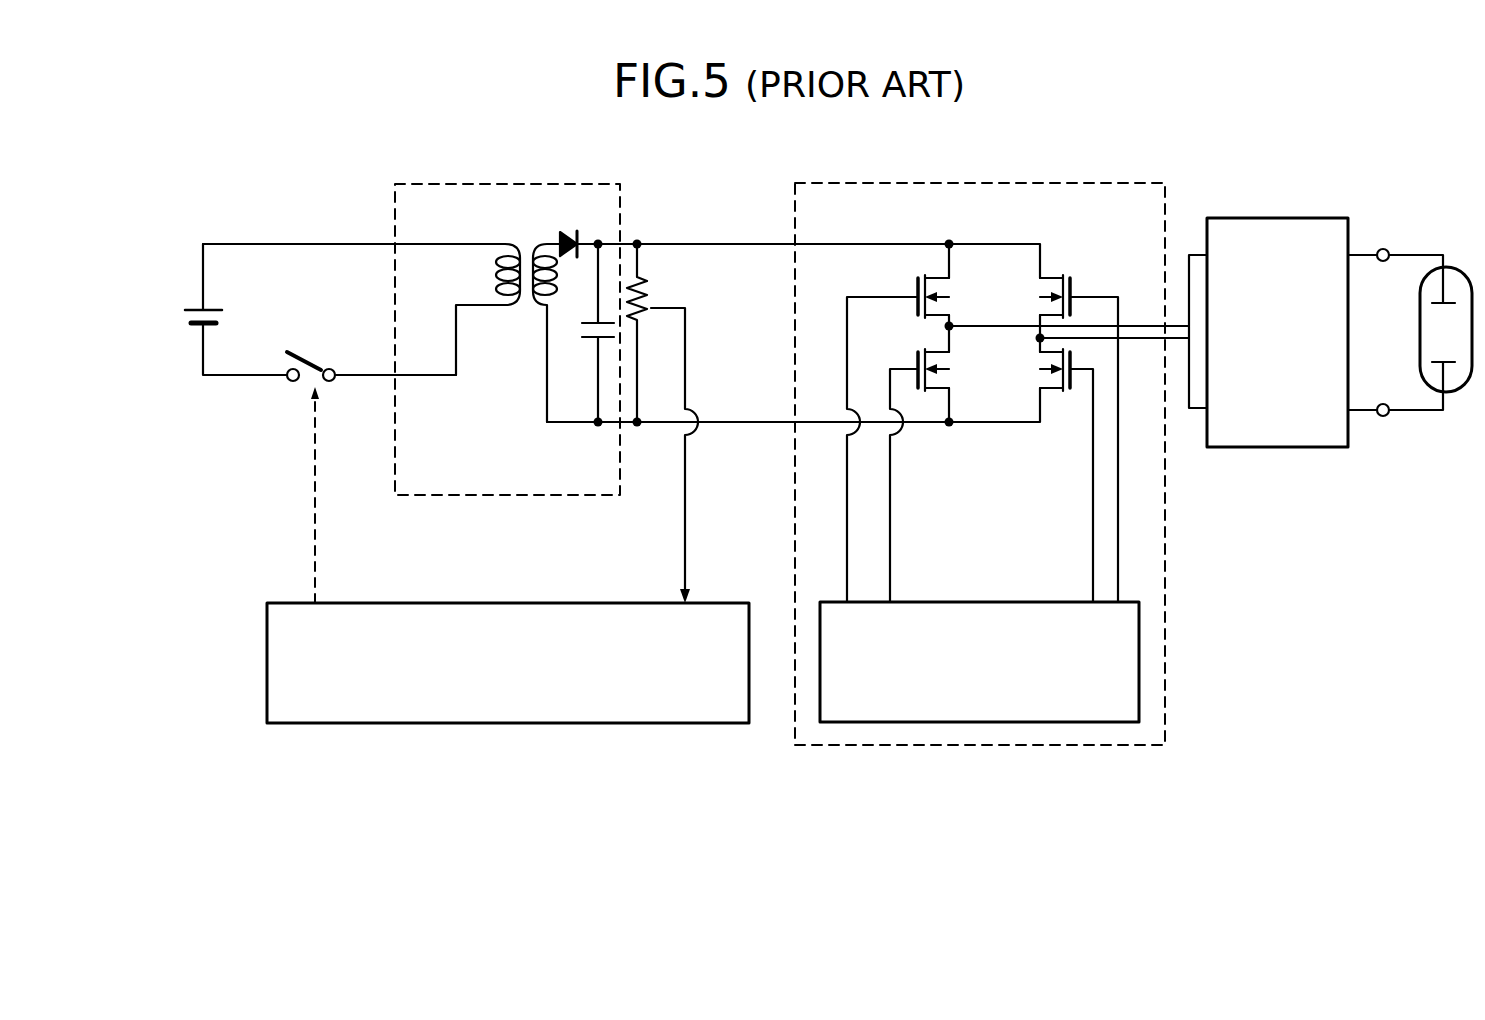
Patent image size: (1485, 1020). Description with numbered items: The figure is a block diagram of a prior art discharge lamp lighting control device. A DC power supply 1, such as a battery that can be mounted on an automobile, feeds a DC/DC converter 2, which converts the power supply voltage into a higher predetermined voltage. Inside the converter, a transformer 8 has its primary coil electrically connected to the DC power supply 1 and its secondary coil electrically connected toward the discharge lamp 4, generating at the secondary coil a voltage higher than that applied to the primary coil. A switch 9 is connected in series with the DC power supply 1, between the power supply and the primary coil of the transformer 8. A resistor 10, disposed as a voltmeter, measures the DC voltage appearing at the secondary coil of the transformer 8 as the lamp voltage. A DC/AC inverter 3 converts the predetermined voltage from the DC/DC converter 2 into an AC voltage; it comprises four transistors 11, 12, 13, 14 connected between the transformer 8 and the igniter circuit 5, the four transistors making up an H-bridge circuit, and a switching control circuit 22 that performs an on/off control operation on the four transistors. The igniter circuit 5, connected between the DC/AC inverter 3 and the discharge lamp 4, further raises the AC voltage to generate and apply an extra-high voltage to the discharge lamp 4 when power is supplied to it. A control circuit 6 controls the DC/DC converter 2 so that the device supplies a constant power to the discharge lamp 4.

The DC power supply 1 is at (194, 308).
The switch 9 is at (318, 363).
The DC/DC converter 2 is at (519, 185).
The transformer 8 is at (526, 241).
The resistor 10 is at (653, 294).
The DC/AC inverter 3 is at (988, 184).
The transistor 11 is at (914, 286).
The transistor 12 is at (914, 350).
The transistor 13 is at (1036, 289).
The transistor 14 is at (1040, 376).
The igniter circuit 5 is at (1258, 219).
The discharge lamp 4 is at (1462, 267).
The control circuit 6 is at (499, 605).
The switching control circuit 22 is at (1007, 603).